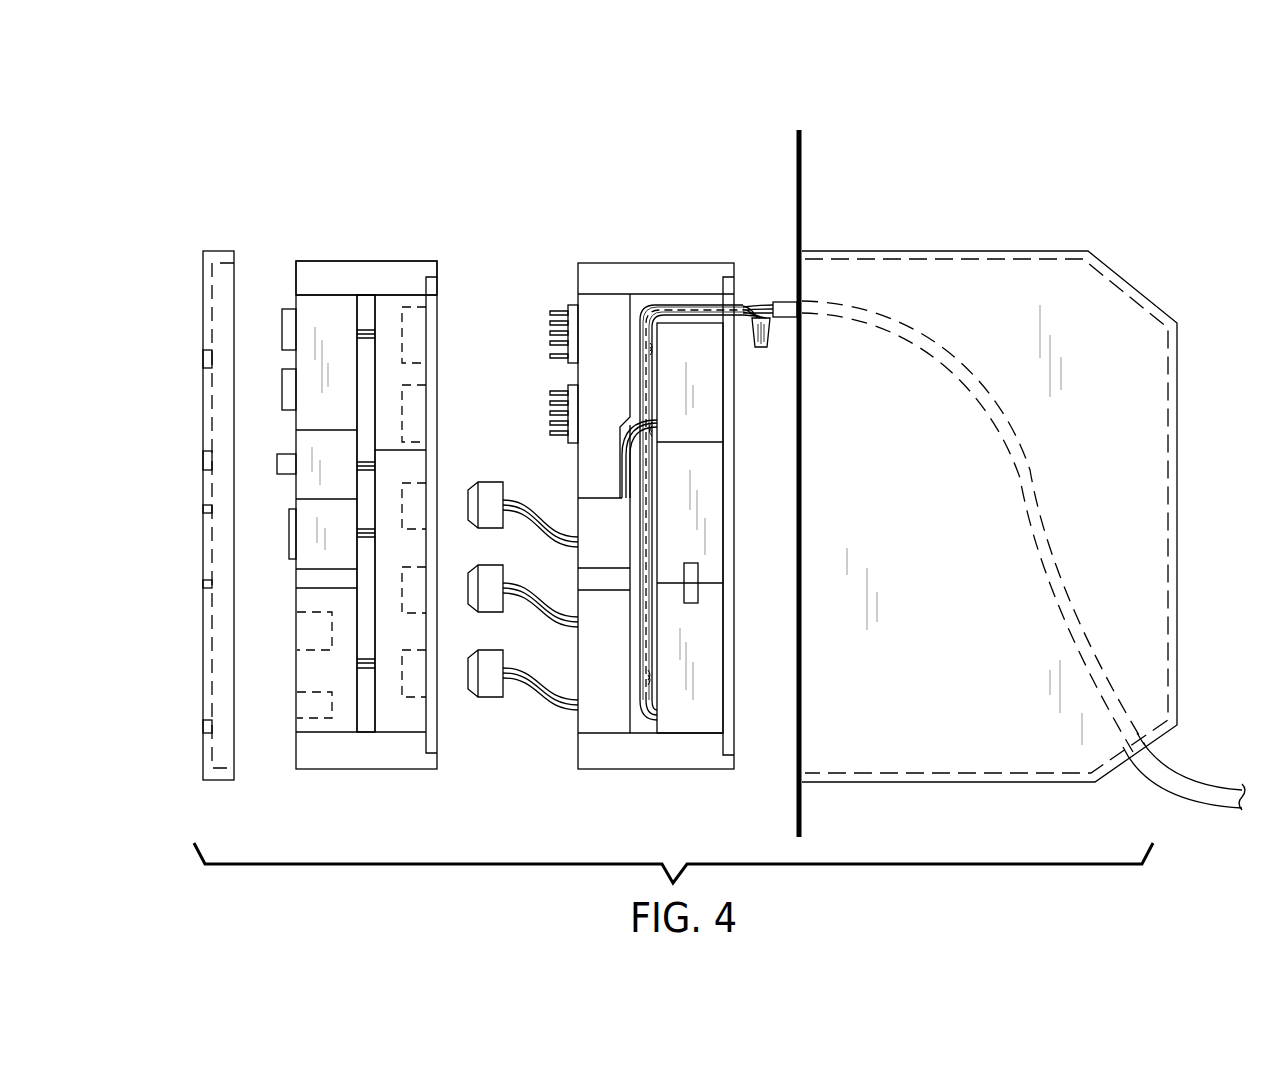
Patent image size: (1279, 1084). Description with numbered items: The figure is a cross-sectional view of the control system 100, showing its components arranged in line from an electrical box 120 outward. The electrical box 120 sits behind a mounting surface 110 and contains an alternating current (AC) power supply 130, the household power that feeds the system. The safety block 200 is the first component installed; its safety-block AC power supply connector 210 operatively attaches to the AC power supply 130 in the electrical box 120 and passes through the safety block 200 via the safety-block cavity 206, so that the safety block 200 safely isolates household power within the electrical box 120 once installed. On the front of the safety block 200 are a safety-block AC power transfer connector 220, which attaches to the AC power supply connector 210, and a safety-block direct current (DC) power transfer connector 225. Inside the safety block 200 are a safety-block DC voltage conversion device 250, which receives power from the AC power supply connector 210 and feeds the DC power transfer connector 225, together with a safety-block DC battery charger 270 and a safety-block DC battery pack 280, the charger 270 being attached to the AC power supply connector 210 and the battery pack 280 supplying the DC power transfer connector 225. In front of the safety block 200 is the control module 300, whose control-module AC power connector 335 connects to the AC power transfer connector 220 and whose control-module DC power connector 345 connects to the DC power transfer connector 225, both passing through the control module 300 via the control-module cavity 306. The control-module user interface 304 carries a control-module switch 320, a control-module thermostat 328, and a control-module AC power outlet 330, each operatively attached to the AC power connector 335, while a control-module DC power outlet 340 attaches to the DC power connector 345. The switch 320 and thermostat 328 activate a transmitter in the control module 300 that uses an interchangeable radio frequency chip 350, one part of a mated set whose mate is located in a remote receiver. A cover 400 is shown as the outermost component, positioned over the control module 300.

The control system 100 is at (980, 133).
The mounting surface 110 is at (798, 160).
The electrical box 120 is at (1088, 250).
The alternating current (AC) power supply 130 is at (1167, 785).
The safety block 200 is at (653, 768).
The safety-block cavity 206 is at (639, 298).
The safety-block alternating current (AC) power supply connector 210 is at (670, 305).
The safety-block alternating current (AC) power transfer connector 220 is at (478, 612).
The safety-block direct current (DC) power transfer connector 225 is at (488, 695).
The safety-block direct current (DC) voltage conversion device 250 is at (690, 340).
The safety-block direct current (DC) battery charger 270 is at (707, 523).
The safety-block direct current (DC) battery pack 280 is at (697, 697).
The control module 300 is at (344, 770).
The control-module user interface 304 is at (293, 276).
The control-module cavity 306 is at (365, 311).
The control-module switch 320 is at (286, 308).
The control-module thermostat 328 is at (280, 467).
The control-module alternating current (AC) power outlet 330 is at (302, 669).
The control-module alternating current (AC) power connector 335 is at (408, 585).
The control-module direct current (DC) power outlet 340 is at (289, 530).
The control-module direct current (DC) power connector 345 is at (408, 680).
The radio frequency chip 350 is at (572, 307).
The cover 400 is at (203, 250).